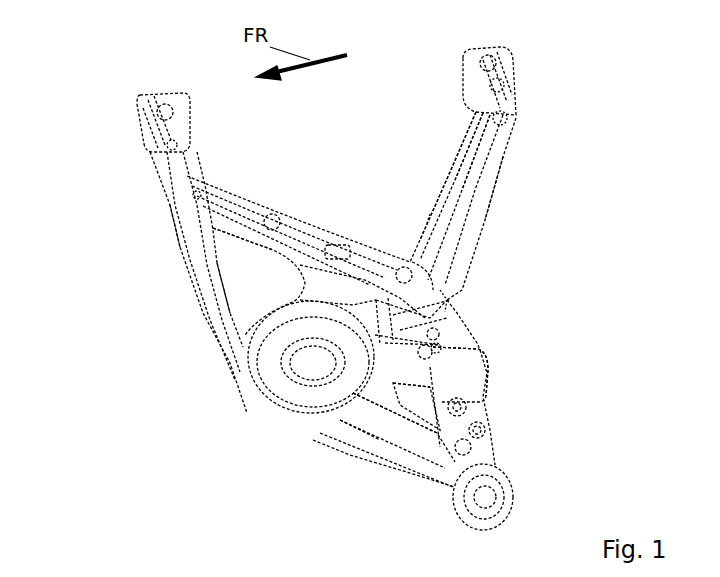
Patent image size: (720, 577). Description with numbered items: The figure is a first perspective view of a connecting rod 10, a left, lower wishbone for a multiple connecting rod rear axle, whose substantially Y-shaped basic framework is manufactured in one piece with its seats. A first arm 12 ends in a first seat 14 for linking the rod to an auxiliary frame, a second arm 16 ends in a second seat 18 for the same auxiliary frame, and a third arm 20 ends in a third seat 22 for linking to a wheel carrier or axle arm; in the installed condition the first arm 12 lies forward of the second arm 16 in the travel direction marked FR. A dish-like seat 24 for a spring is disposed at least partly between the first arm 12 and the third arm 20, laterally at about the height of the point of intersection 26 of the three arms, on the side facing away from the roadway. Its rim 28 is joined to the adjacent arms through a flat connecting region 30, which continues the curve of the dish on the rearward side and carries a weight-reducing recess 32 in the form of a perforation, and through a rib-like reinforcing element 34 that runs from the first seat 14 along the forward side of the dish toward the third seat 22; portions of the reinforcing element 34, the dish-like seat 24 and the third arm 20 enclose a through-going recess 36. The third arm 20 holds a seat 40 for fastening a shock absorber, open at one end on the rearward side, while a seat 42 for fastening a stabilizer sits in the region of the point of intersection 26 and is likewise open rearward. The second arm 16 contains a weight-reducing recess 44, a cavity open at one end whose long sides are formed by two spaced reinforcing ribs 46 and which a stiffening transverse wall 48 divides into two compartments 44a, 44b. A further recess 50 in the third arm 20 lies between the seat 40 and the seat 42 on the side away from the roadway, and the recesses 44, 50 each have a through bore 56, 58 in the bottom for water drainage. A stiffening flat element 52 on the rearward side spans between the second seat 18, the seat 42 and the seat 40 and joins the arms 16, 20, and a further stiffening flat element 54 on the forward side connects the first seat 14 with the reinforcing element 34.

The connecting rod 10 is at (76, 70).
The first arm 12 is at (294, 222).
The first seat 14 is at (147, 128).
The second arm 16 is at (436, 170).
The second seat 18 is at (470, 82).
The third arm 20 is at (476, 415).
The third seat 22 is at (480, 498).
The dish-like seat 24 is at (283, 385).
The point of intersection 26 is at (408, 290).
The rim 28 is at (385, 338).
The flat connecting region 30 is at (338, 295).
The weight-reducing recess 32 is at (237, 260).
The reinforcing element 34 is at (218, 297).
The recess 36 is at (378, 418).
The seat for the fastening of a shock absorber 40 is at (483, 370).
The seat for the fastening of a stabilizer 42 is at (448, 300).
The recess 44 is at (480, 170).
The compartment 44a is at (460, 190).
The compartment 44b is at (497, 100).
The reinforcing ribs 46 is at (427, 218).
The stiffening transverse wall 48 is at (505, 122).
The recess 50 is at (437, 343).
The stiffening flat element 52 is at (460, 260).
The stiffening flat element 54 is at (178, 209).
The through bore 56 is at (422, 265).
The through bore 58 is at (423, 350).